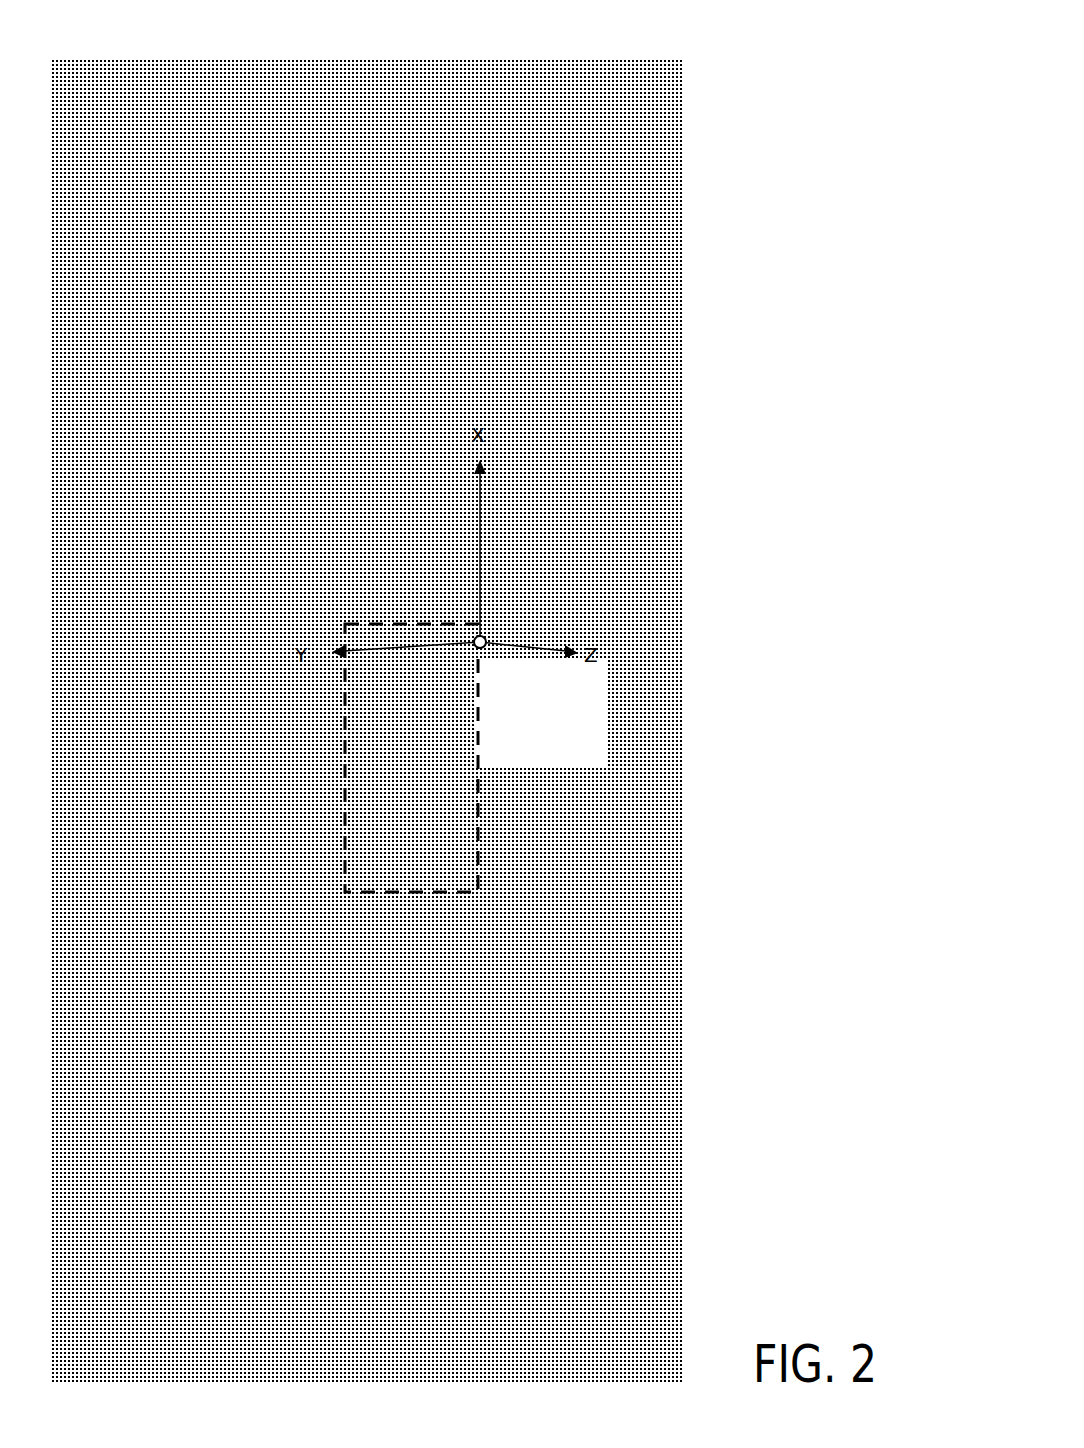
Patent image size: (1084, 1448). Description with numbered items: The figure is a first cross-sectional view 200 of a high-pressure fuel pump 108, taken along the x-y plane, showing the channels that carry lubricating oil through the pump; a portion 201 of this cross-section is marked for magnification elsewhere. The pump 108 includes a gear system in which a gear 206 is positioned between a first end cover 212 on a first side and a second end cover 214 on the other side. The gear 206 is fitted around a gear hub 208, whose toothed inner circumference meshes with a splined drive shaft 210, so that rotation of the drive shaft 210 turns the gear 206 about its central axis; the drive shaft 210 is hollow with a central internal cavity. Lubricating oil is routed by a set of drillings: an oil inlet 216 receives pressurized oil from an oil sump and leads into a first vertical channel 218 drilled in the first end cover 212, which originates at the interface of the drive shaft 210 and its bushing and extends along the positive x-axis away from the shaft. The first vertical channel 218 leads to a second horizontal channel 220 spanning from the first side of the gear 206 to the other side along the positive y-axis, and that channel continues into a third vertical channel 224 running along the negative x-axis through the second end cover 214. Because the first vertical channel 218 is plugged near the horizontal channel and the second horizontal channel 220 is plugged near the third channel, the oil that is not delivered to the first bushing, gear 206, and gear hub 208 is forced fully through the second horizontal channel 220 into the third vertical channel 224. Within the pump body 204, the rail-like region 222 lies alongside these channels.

The first cross-sectional view 200 is at (669, 46).
The high-pressure fuel pump 108 is at (669, 193).
The body 204 is at (132, 650).
The portion 201 is at (371, 603).
The second end cover 214 is at (350, 700).
The second horizontal channel 220 is at (430, 630).
The first vertical channel 218 is at (478, 677).
The oil inlet 216 is at (472, 718).
The drive shaft 210 is at (447, 763).
The gear hub 208 is at (420, 780).
The first end cover 212 is at (485, 848).
The gear 206 is at (455, 892).
The third vertical channel 224 is at (368, 850).
The rail end 222 is at (368, 850).